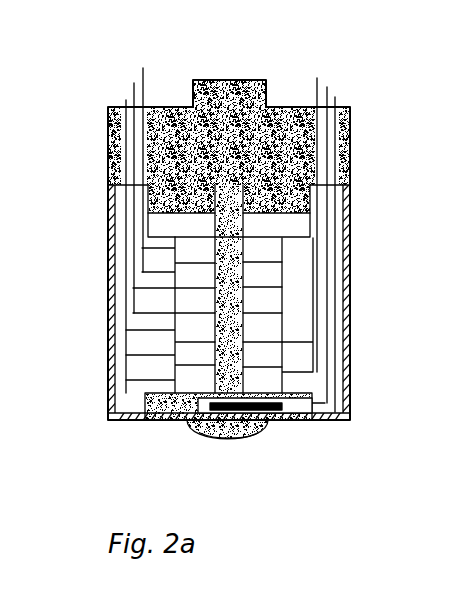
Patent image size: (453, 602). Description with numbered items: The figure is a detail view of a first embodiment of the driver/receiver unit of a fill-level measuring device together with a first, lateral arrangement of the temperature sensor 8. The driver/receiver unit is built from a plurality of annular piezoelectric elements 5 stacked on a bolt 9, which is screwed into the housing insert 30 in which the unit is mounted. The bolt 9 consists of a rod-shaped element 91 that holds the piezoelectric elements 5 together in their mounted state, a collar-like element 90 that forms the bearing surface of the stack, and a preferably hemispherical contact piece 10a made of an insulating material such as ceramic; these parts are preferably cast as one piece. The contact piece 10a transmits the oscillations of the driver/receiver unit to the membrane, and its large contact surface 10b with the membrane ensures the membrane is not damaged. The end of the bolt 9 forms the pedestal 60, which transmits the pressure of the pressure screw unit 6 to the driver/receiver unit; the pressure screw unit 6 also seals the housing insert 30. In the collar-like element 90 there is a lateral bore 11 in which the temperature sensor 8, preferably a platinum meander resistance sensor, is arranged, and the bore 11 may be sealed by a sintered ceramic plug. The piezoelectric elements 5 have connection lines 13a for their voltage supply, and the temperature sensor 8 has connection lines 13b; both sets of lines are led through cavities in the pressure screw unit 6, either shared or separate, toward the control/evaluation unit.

The piezoelectric elements 5 is at (268, 389).
The pressure screw unit 6 is at (293, 160).
The temperature sensor 8 is at (282, 412).
The bolt 9 is at (244, 450).
The contact piece 10a is at (240, 428).
The contact surface 10b is at (227, 438).
The lateral bore 11 is at (302, 410).
The connection lines 13a is at (143, 70).
The connection lines 13b is at (327, 87).
The housing insert 30 is at (107, 311).
The pedestal 60 is at (297, 228).
The collar-like element 90 is at (172, 410).
The rod-shaped element 91 is at (220, 383).